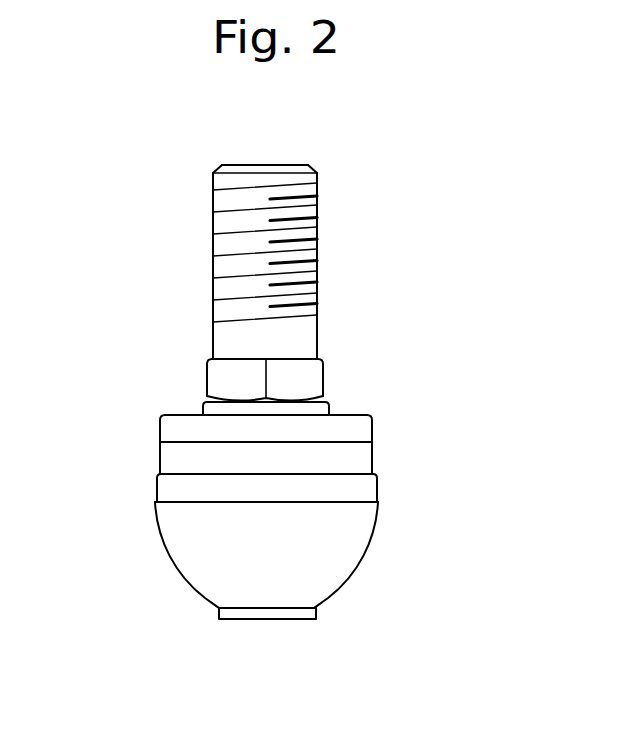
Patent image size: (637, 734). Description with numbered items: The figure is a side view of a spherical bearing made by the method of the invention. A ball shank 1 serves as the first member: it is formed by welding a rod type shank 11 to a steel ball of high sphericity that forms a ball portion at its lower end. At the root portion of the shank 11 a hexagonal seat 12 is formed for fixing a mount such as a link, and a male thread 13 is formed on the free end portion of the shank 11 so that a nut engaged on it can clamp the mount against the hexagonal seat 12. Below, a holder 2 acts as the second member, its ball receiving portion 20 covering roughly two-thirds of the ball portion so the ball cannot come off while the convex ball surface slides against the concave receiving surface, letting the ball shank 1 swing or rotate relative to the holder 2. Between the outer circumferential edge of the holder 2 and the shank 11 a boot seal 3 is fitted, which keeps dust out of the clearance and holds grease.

The ball shank 1 is at (261, 238).
The shank 11 is at (278, 167).
The male thread 13 is at (218, 247).
The hexagonal seat 12 is at (213, 377).
The boot seal 3 is at (376, 430).
The holder 2 is at (266, 560).
The ball receiving portion 20 is at (188, 568).